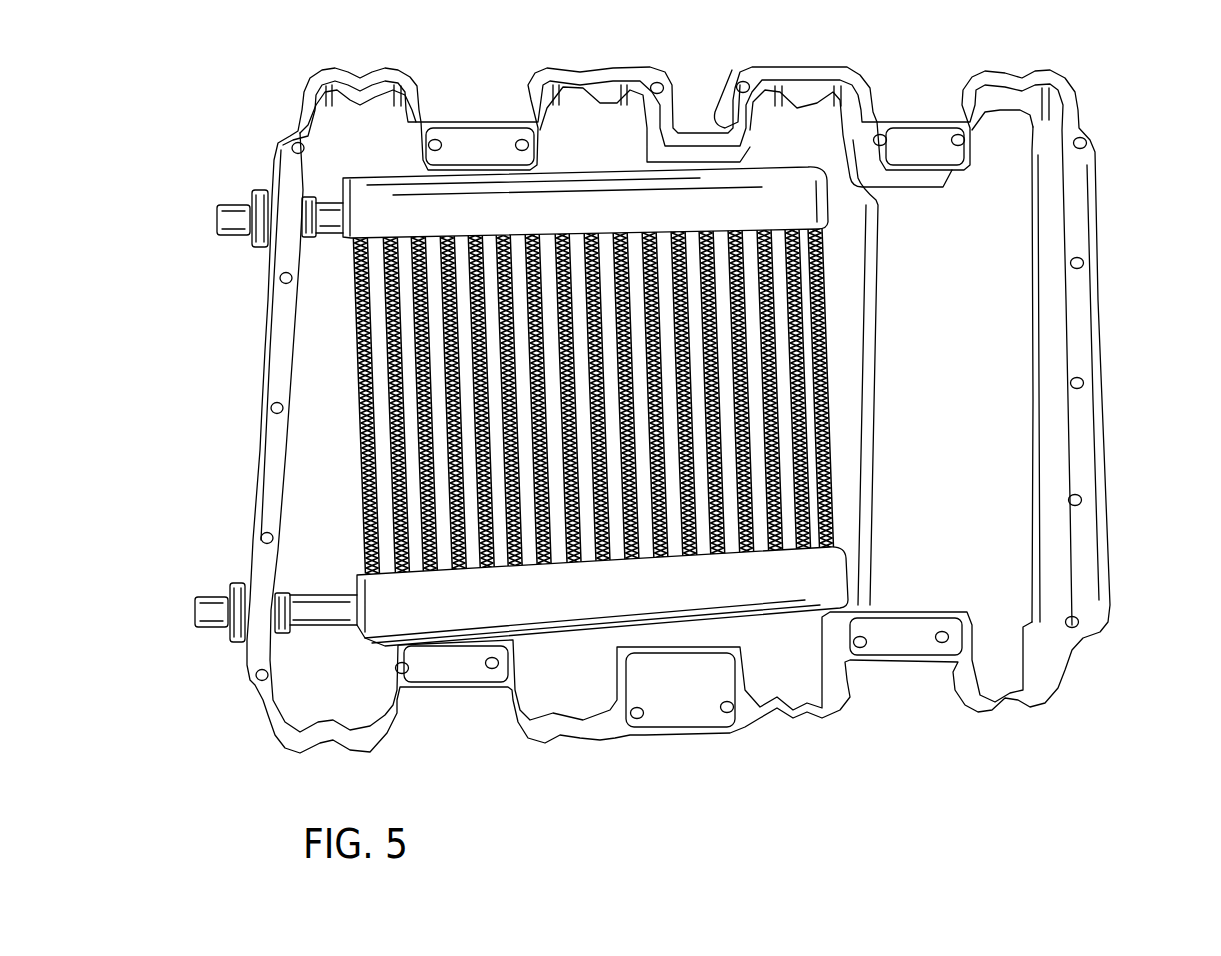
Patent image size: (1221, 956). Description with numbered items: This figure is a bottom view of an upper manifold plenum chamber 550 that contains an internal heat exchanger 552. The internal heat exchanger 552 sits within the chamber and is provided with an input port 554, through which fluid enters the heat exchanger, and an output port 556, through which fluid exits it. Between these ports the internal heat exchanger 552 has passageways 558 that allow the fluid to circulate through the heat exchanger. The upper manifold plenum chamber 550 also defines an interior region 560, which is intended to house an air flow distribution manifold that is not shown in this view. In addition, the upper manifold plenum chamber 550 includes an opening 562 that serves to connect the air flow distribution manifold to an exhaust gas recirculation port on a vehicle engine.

The upper manifold plenum chamber 550 is at (1070, 441).
The internal heat exchanger 552 is at (392, 604).
The input port 554 is at (327, 210).
The output port 556 is at (317, 617).
The passageways 558 is at (384, 451).
The interior region 560 is at (965, 311).
The opening 562 is at (1027, 568).